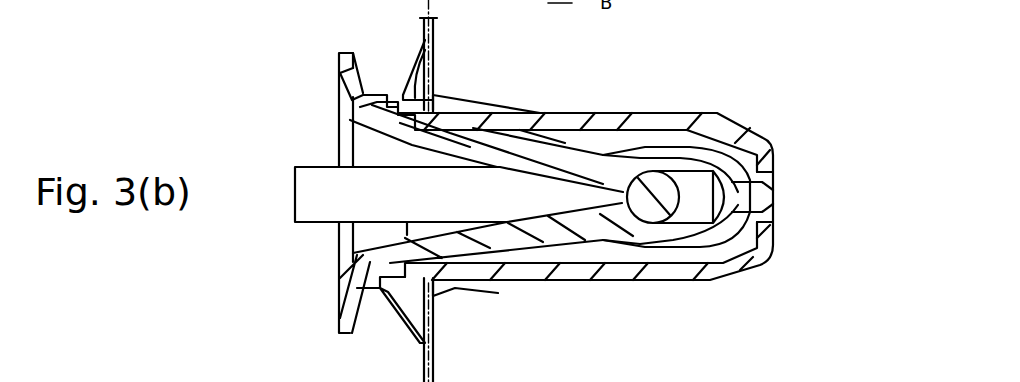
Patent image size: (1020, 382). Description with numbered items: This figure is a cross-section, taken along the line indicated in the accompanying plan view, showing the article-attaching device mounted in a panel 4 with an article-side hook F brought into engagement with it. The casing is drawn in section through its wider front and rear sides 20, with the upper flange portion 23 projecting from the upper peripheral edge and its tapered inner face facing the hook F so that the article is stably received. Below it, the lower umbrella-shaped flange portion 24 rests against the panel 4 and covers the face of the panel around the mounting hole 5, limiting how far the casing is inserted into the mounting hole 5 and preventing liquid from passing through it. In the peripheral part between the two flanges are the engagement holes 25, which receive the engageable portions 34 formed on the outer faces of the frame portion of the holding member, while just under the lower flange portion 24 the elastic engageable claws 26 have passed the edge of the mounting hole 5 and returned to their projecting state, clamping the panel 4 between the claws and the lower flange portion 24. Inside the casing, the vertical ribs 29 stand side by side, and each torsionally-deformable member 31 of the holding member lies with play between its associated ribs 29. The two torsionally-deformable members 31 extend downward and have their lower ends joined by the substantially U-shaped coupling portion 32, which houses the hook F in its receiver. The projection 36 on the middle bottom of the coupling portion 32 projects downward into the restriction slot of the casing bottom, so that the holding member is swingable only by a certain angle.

The front and rear sides 20 is at (700, 112).
The upper flange portion 23 is at (343, 88).
The lower umbrella-shaped flange portion 24 is at (413, 62).
The engagement holes 25 is at (318, 302).
The engageable portions 34 is at (373, 297).
The elastic engageable claws 26 is at (460, 97).
The vertical ribs 29 is at (635, 140).
The torsionally-deformable members 31 is at (522, 237).
The coupling portion 32 is at (705, 240).
The projection 36 is at (773, 201).
The panel 4 is at (417, 33).
The mounting hole 5 is at (432, 70).
The hook F is at (307, 203).